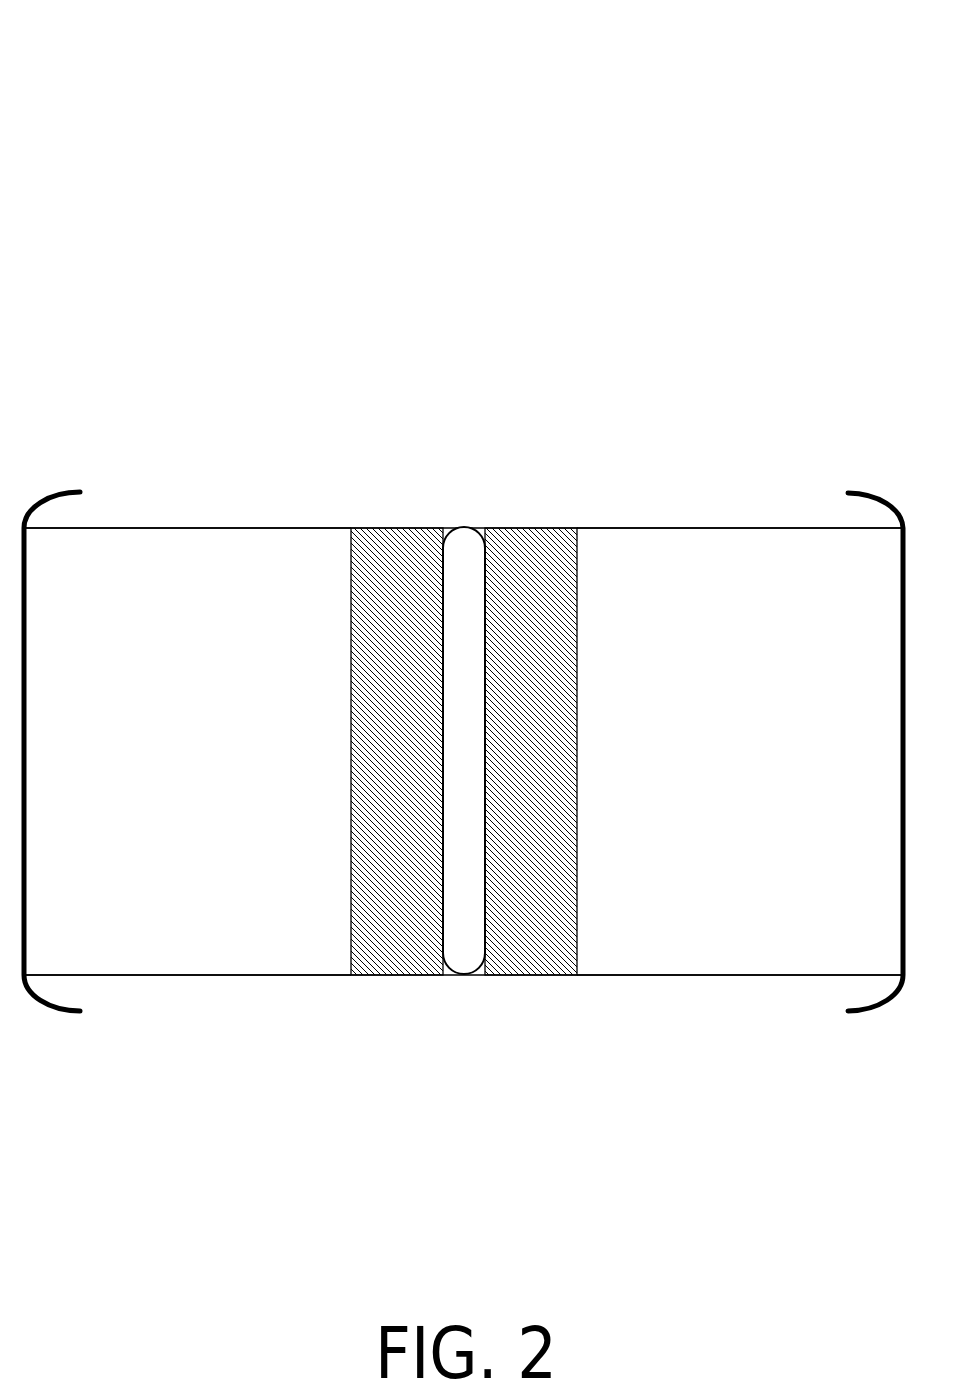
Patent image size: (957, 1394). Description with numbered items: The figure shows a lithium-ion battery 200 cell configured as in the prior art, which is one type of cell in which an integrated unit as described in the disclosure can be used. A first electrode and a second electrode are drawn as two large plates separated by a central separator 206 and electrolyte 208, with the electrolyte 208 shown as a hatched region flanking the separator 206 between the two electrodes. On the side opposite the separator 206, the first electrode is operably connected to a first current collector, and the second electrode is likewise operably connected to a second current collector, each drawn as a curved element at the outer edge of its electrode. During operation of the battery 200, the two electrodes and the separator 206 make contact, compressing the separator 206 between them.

The battery 200 is at (732, 71).
The separator 206 is at (483, 527).
The electrolyte 208 is at (545, 935).